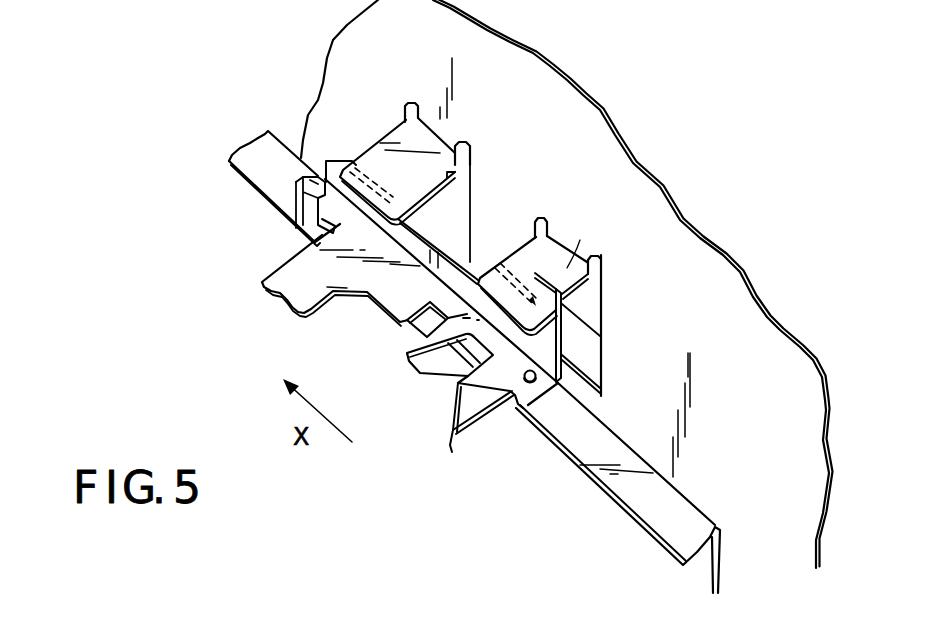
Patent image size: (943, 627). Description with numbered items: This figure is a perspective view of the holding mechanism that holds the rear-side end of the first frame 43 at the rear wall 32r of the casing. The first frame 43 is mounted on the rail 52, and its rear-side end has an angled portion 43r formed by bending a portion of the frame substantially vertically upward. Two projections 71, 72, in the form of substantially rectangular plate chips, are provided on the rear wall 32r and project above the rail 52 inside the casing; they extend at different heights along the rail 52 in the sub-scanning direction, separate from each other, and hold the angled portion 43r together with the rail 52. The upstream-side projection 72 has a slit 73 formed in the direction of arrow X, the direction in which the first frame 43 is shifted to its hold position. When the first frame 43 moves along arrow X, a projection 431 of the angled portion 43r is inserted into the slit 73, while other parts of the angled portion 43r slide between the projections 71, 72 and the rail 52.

The rear wall 32r is at (567, 108).
The rail 52 is at (283, 158).
The first frame 43 is at (278, 268).
The angled portion 43r is at (564, 332).
The projection 71 is at (446, 189).
The projection 72 is at (563, 276).
The slit 73 is at (525, 287).
The projection 431 is at (595, 242).